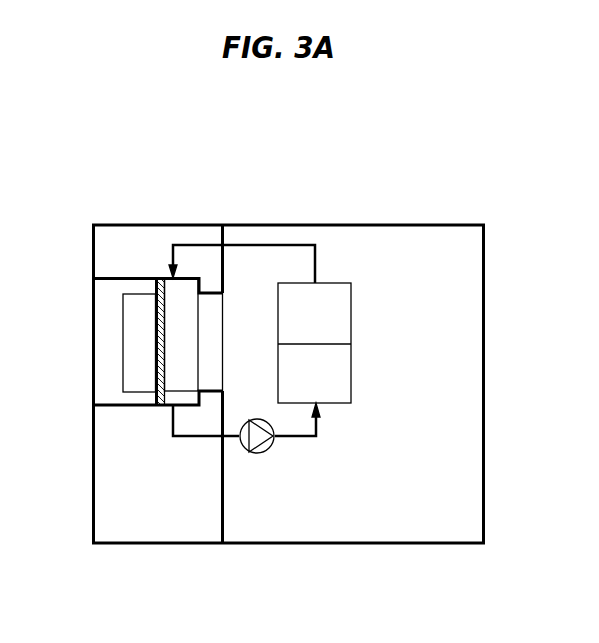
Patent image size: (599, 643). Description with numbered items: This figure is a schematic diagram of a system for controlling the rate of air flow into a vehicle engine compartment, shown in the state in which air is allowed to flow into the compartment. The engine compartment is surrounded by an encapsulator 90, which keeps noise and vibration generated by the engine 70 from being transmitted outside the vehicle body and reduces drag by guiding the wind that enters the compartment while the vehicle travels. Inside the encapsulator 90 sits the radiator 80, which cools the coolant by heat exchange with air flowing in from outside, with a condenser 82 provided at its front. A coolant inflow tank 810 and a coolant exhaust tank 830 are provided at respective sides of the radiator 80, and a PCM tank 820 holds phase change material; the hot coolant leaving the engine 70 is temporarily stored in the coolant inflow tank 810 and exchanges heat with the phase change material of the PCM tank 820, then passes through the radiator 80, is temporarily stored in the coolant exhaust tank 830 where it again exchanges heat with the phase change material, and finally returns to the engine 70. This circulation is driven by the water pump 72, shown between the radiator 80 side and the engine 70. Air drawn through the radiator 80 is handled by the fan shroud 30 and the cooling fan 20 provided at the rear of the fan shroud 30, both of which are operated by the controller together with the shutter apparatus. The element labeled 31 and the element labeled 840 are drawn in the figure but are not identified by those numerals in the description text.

The encapsulator 90 is at (366, 223).
The radiator 80 is at (183, 316).
The condenser 82 is at (123, 385).
The engine 70 is at (348, 380).
The water pump 72 is at (265, 450).
The lower support 31 is at (153, 393).
The fan shroud 30 is at (161, 439).
The cooling fan 20 is at (203, 391).
The coolant inflow tank 810 is at (197, 211).
The PCM tank 820 is at (170, 277).
The coolant exhaust tank 830 is at (163, 448).
The outlet port 840 is at (160, 405).